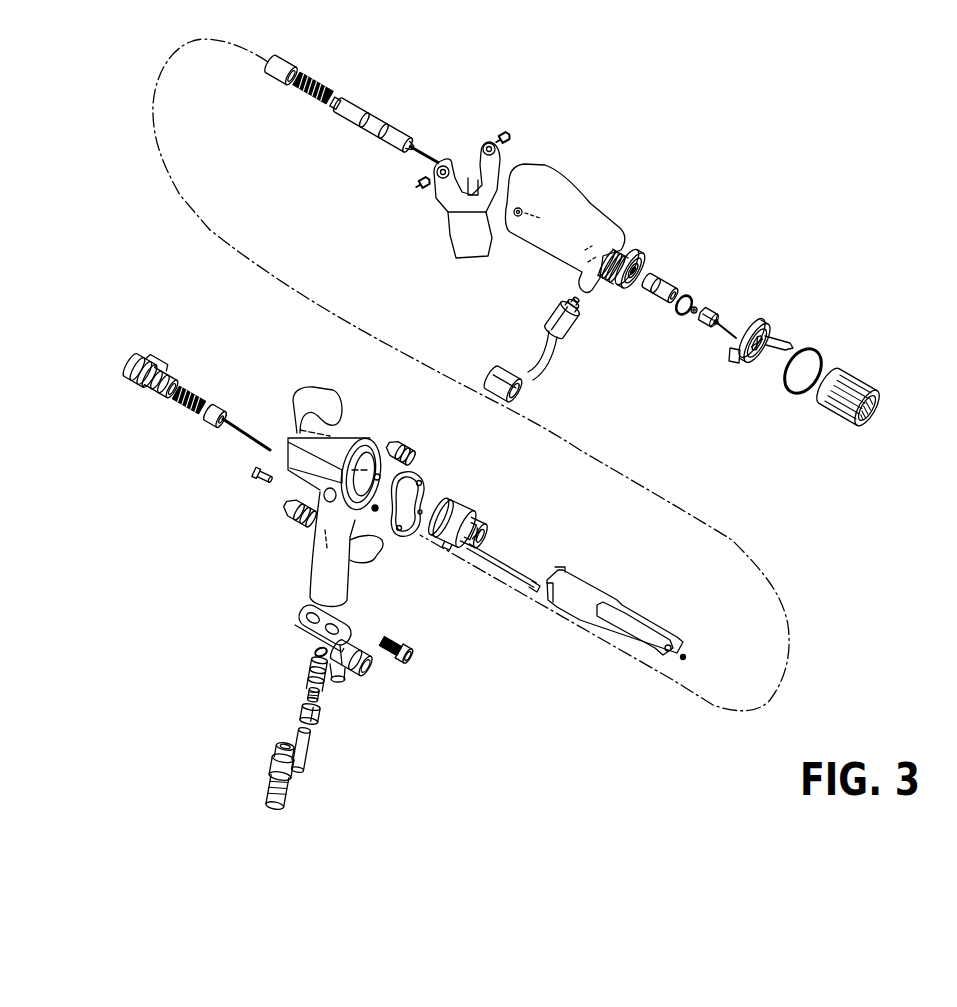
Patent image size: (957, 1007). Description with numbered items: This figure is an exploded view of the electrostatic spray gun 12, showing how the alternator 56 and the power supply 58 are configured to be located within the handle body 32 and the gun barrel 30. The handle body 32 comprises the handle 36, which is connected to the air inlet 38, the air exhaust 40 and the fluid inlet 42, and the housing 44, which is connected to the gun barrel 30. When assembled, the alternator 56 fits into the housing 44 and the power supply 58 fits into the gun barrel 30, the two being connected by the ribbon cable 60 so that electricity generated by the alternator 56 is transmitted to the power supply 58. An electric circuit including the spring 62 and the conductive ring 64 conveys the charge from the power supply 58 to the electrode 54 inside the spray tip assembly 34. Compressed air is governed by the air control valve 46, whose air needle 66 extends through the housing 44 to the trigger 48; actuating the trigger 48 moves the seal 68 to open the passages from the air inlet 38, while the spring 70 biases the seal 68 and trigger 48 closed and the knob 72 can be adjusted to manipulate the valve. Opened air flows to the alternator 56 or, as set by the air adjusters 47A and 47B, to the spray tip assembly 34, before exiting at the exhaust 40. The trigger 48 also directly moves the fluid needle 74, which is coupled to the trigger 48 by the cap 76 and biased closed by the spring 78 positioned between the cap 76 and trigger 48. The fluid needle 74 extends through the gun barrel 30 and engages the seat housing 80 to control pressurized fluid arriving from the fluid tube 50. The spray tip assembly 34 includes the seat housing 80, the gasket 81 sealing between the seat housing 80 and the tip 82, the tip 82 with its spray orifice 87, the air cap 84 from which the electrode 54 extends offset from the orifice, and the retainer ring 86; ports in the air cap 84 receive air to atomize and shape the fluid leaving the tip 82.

The electrostatic spray gun 12 is at (747, 152).
The gun barrel 30 is at (558, 188).
The handle body 32 is at (346, 484).
The spray tip assembly 34 is at (760, 373).
The handle 36 is at (317, 572).
The air inlet 38 is at (268, 773).
The air exhaust 40 is at (313, 745).
The fluid inlet 42 is at (355, 674).
The housing 44 is at (347, 437).
The air control valve 46 is at (157, 377).
The air adjuster 47A is at (292, 518).
The air adjuster 47B is at (412, 446).
The trigger 48 is at (470, 247).
The fluid tube 50 is at (541, 378).
The electrode 54 is at (730, 333).
The alternator 56 is at (473, 505).
The power supply 58 is at (572, 578).
The ribbon cable 60 is at (513, 566).
The spring 62 is at (684, 654).
The conductive ring 64 is at (678, 312).
The air needle 66 is at (240, 425).
The seal 68 is at (218, 407).
The spring 70 is at (186, 409).
The knob 72 is at (158, 355).
The fluid needle 74 is at (369, 110).
The cap 76 is at (281, 59).
The spring 78 is at (312, 93).
The seat housing 80 is at (667, 280).
The gasket 81 is at (694, 314).
The tip 82 is at (710, 312).
The air cap 84 is at (755, 322).
The retainer ring 86 is at (852, 371).
The spray orifice 87 is at (720, 319).